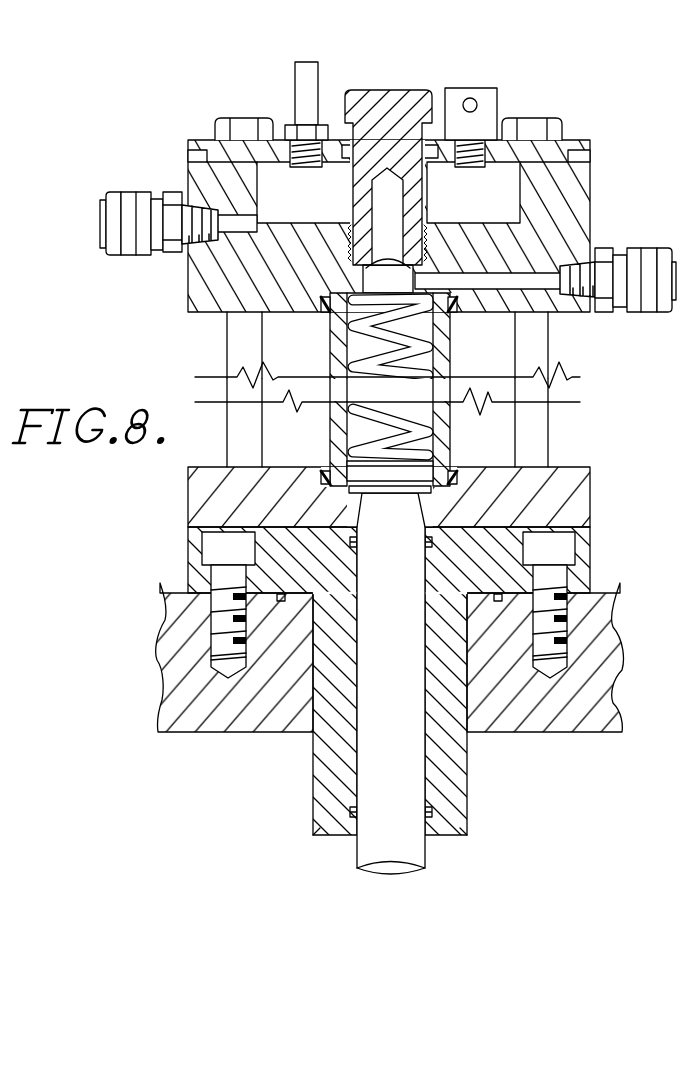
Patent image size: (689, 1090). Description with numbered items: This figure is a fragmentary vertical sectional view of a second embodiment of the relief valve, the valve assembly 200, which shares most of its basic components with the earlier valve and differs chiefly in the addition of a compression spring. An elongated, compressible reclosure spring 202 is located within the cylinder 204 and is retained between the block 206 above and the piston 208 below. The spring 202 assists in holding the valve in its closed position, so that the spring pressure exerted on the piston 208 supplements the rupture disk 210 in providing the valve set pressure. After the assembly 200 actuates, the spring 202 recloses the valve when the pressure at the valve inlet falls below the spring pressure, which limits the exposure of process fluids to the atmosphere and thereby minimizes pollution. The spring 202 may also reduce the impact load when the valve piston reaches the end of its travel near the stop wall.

The valve assembly 200 is at (612, 470).
The reclosure spring 202 is at (417, 343).
The cylinder 204 is at (338, 333).
The block 206 is at (572, 202).
The piston 208 is at (423, 468).
The rupture disk 210 is at (389, 262).